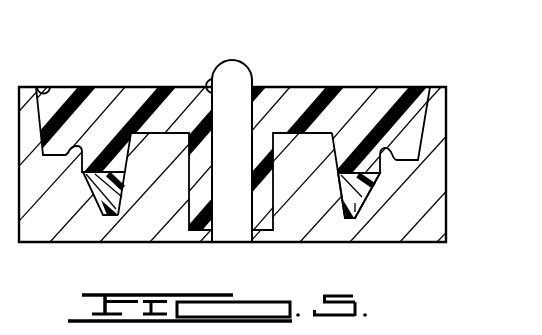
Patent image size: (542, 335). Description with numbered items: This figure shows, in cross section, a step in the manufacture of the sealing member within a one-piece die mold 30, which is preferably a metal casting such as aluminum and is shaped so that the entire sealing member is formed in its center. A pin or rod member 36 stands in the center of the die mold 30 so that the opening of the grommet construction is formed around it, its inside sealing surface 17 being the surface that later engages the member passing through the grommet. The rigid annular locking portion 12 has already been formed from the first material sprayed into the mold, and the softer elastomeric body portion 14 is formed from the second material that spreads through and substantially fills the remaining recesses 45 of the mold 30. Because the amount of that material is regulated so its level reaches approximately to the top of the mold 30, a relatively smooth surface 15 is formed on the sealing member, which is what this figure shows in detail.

The annular locking portion 12 is at (342, 243).
The body portion 14 is at (345, 100).
The smooth surface 15 is at (95, 87).
The sealing surface 17 is at (212, 80).
The die mold 30 is at (50, 227).
The pin or rod member 36 is at (235, 68).
The remaining recesses 45 is at (50, 88).